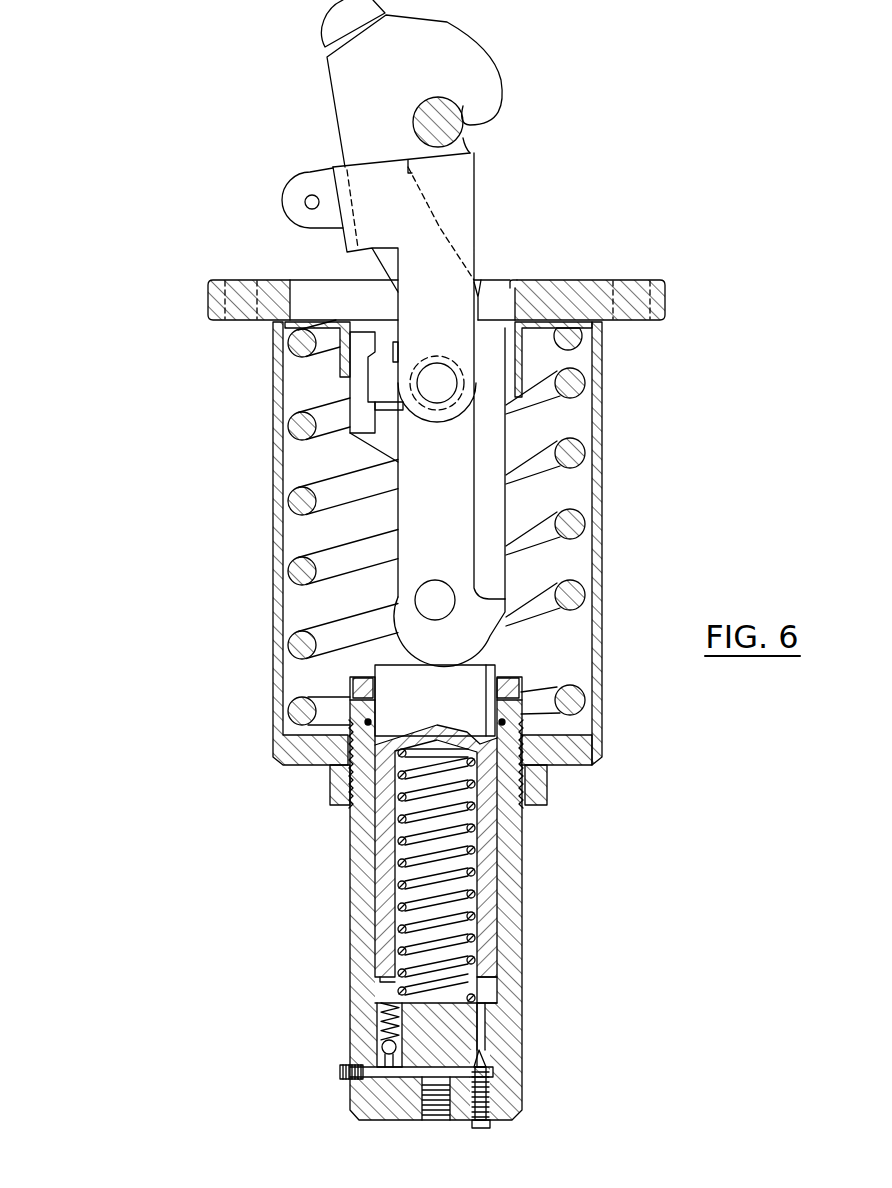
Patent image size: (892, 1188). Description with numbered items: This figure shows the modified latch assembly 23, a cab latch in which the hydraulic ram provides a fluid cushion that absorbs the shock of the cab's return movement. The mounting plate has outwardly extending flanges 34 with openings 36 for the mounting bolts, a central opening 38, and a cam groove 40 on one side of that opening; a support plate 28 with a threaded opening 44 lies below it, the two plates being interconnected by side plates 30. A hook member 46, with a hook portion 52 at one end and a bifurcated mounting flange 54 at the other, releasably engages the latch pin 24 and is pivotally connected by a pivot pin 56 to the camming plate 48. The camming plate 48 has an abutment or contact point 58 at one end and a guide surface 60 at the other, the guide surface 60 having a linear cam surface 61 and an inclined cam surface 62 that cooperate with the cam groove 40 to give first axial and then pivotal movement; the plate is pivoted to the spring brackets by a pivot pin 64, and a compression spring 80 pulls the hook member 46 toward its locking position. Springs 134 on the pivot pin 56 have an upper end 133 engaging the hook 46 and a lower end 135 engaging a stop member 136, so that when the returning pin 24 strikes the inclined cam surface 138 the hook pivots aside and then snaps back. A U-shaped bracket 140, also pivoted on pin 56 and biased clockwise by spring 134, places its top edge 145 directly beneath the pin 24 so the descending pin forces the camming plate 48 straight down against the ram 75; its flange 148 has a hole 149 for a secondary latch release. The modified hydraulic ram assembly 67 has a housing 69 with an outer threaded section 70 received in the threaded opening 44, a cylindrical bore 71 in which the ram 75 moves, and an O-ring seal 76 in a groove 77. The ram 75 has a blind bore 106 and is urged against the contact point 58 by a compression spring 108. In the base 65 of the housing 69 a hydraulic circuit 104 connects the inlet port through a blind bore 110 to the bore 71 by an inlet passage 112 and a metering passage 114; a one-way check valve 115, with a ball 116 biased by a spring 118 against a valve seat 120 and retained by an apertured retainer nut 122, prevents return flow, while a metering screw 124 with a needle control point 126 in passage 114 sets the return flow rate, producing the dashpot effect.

The inclined cam surface 138 is at (386, 15).
The hook portion 52 is at (473, 50).
The latch pin 24 is at (460, 118).
The top edge of bracket 145 is at (463, 147).
The U-shaped bracket 140 is at (337, 168).
The flange 148 is at (283, 217).
The hole 149 is at (307, 202).
The hook member 46 is at (440, 228).
The bifurcated mounting flange 54 is at (480, 282).
The central opening 38 is at (512, 282).
The flanges 34 is at (210, 293).
The modified latch assembly 23 is at (562, 275).
The openings 36 is at (240, 278).
The cam groove 40 is at (295, 287).
The side plates 30 is at (272, 568).
The outer threaded section 70 is at (592, 727).
The linear cam surface 61 is at (350, 388).
The guide surface 60 is at (365, 337).
The stop member 136 is at (380, 418).
The lower end of spring 135 is at (401, 414).
The upper end of spring 133 is at (399, 348).
The pivot pin 56 is at (447, 388).
The spring 134 is at (457, 410).
The inclined cam surface 62 is at (394, 458).
The pivot pin 64 is at (432, 590).
The camming plate 48 is at (511, 428).
The compression spring 80 is at (565, 513).
The abutment or contact point 58 is at (446, 665).
The groove 77 is at (359, 717).
The O-ring seal 76 is at (505, 698).
The threaded opening 44 is at (352, 760).
The support plate 28 is at (570, 765).
The modified hydraulic ram assembly 67 is at (542, 850).
The housing 69 is at (358, 872).
The ram 75 is at (488, 818).
The base of housing 65 is at (510, 1093).
The blind bore 106 is at (473, 902).
The compression spring 108 is at (472, 935).
The bore 71 is at (495, 985).
The apertured retainer nut 122 is at (377, 1005).
The spring 118 is at (415, 1020).
The inlet passage 112 is at (377, 1027).
The ball 116 is at (377, 1050).
The valve seat 120 is at (420, 1055).
The hydraulic circuit 104 is at (370, 1085).
The one-way check valve 115 is at (368, 1052).
The blind bore 110 is at (400, 1070).
The metering passage 114 is at (483, 1027).
The needle control point 126 is at (485, 1057).
The metering screw 124 is at (487, 1123).